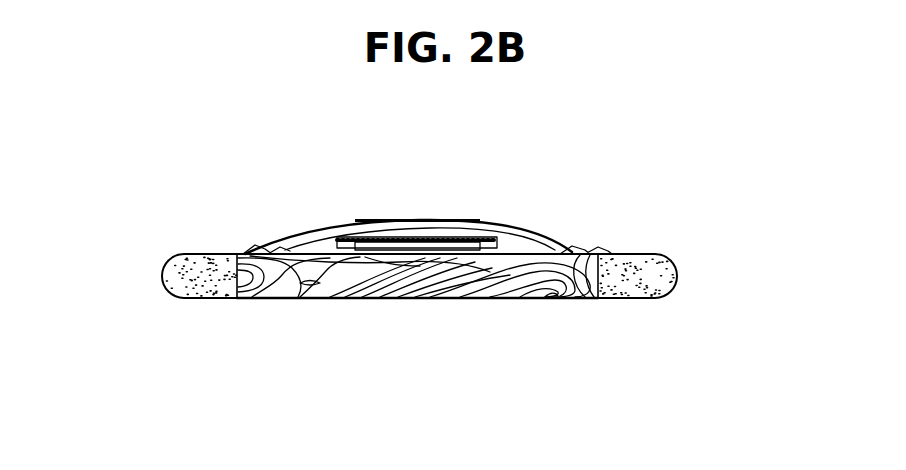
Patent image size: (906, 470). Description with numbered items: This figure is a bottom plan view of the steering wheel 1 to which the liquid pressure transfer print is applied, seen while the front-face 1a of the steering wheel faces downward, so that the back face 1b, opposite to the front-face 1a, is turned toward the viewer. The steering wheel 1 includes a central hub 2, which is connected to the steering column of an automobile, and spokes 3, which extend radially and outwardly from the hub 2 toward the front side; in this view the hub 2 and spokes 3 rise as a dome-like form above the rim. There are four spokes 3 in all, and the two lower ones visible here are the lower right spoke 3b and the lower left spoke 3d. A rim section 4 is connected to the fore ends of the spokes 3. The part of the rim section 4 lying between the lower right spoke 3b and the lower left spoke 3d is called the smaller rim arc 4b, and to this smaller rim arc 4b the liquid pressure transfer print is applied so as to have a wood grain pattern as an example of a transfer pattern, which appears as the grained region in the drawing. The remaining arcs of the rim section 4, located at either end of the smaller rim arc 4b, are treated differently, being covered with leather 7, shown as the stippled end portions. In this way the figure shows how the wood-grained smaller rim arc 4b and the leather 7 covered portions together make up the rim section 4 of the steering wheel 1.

The steering wheel 1 is at (714, 176).
The front-face 1a is at (431, 299).
The back face 1b is at (208, 254).
The central hub 2 is at (412, 222).
The spokes 3 is at (444, 217).
The lower right spoke 3b is at (628, 216).
The lower left spoke 3d is at (323, 214).
The rim section 4 is at (431, 326).
The smaller rim arc 4b is at (597, 335).
The leather 7 is at (198, 298).